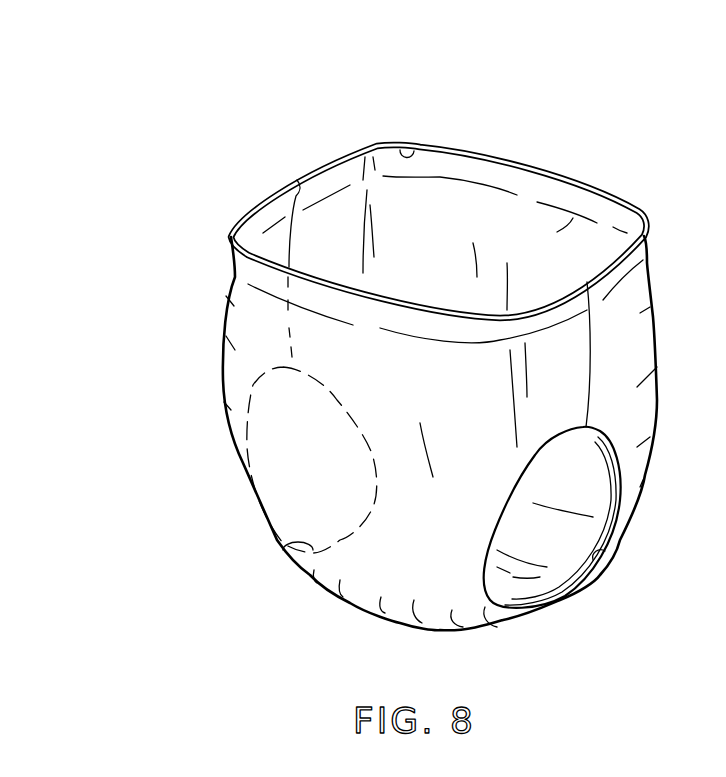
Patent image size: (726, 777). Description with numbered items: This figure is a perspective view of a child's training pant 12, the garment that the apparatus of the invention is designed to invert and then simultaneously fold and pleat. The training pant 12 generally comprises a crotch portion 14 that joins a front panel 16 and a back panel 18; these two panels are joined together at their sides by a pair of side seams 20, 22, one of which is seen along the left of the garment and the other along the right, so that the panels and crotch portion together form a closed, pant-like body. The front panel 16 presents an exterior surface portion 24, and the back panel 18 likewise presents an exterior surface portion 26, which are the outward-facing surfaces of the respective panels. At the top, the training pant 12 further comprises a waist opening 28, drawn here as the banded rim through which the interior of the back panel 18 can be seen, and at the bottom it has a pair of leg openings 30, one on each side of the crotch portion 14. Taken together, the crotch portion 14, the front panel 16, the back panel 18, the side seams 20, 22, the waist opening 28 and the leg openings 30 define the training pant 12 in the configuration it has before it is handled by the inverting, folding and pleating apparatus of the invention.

The training pant 12 is at (531, 110).
The crotch portion 14 is at (377, 613).
The front panel 16 is at (395, 388).
The back panel 18 is at (464, 244).
The side seam 20 is at (300, 182).
The side seam 22 is at (593, 337).
The exterior surface portion 24 is at (373, 457).
The exterior surface portion 26 is at (573, 217).
The waist opening 28 is at (406, 146).
The leg openings 30 is at (277, 547).